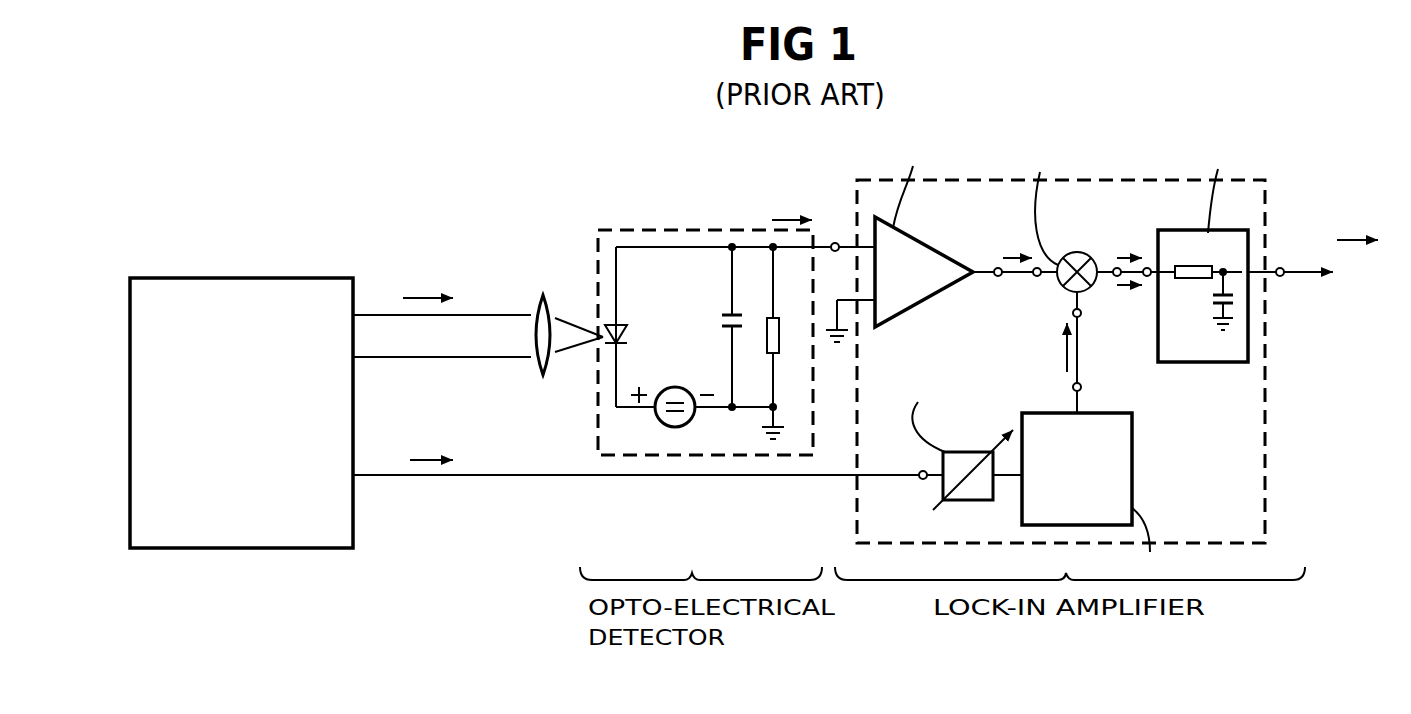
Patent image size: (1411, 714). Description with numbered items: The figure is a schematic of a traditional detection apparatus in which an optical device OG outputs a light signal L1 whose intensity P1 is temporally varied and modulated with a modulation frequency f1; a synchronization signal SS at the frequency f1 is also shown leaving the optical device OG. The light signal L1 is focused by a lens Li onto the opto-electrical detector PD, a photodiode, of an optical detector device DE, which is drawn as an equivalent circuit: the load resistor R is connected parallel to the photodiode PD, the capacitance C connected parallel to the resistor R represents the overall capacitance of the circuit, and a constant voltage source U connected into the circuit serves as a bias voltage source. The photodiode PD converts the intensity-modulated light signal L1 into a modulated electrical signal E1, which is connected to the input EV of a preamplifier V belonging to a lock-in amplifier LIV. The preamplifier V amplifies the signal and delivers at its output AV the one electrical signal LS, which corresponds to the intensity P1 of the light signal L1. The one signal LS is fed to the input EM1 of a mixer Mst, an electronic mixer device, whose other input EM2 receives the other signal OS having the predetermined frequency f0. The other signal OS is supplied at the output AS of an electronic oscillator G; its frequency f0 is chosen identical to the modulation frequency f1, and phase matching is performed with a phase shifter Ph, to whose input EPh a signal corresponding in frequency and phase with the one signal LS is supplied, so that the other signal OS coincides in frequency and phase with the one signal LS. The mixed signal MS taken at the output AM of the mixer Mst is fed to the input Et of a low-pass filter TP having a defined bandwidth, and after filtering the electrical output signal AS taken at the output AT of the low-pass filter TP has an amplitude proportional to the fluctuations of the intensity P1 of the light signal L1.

The optical device OG is at (262, 278).
The light signal L1 is at (393, 357).
The intensity P1 is at (425, 277).
The lens Li is at (545, 296).
The optical detector device DE is at (598, 422).
The opto-electrical detector PD is at (631, 334).
The capacitance C is at (723, 327).
The load resistor R is at (781, 343).
The voltage source U is at (676, 387).
The electrical signal E1 is at (792, 202).
The input of the preamplifier EV is at (835, 243).
The lock-in amplifier LIV is at (1265, 478).
The preamplifier V is at (921, 242).
The output of the preamplifier AV is at (998, 277).
The one electrical signal LS is at (1017, 240).
The input of the mixer EM1 is at (1037, 277).
The mixer Mst is at (1060, 257).
The output of the mixer AM is at (1115, 267).
The input of the low-pass filter Et is at (1147, 267).
The mixed signal MS is at (1131, 304).
The other input of the mixer EM2 is at (1081, 315).
The other electrical signal OS is at (1051, 347).
The output of the oscillator / electrical output signal AS is at (1081, 387).
The output of the low-pass filter AT is at (1281, 267).
The low-pass filter TP is at (1180, 362).
The synchronization signal SS is at (687, 461).
The modulation frequency f1 is at (389, 499).
The input of the phase shifter EPh is at (923, 480).
The phase shifter Ph is at (977, 452).
The oscillator G is at (1132, 475).
The predetermined frequency f0 is at (1079, 473).